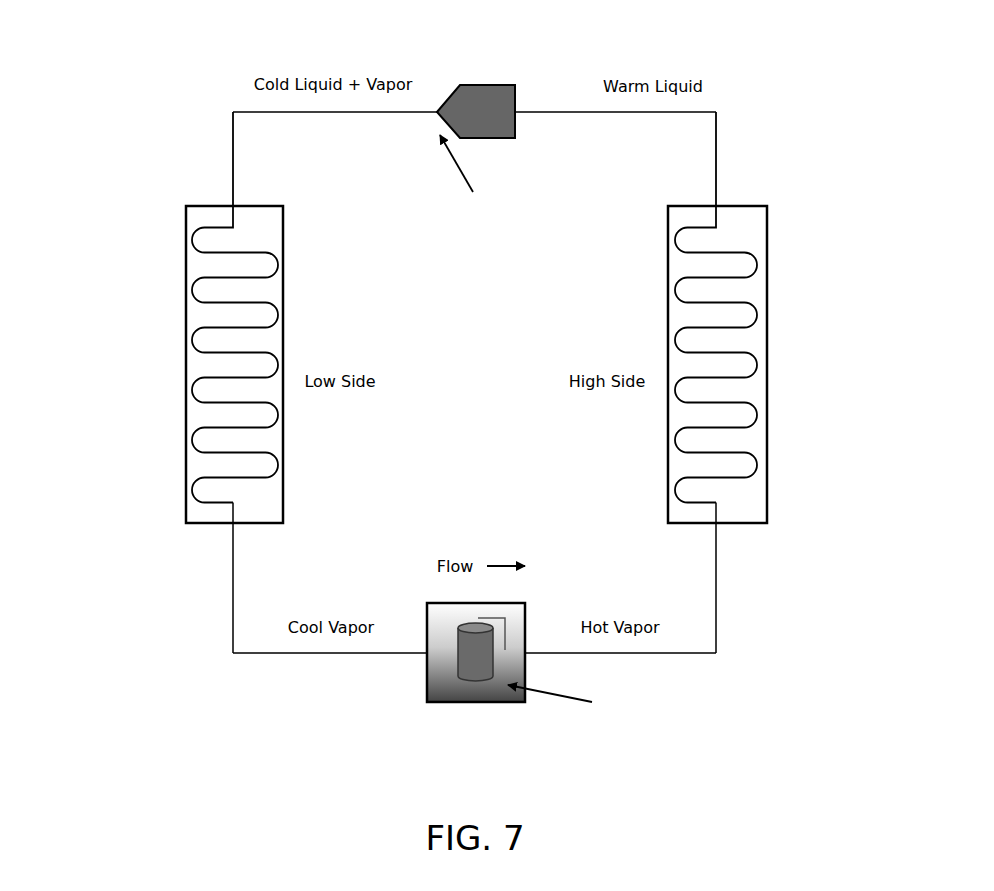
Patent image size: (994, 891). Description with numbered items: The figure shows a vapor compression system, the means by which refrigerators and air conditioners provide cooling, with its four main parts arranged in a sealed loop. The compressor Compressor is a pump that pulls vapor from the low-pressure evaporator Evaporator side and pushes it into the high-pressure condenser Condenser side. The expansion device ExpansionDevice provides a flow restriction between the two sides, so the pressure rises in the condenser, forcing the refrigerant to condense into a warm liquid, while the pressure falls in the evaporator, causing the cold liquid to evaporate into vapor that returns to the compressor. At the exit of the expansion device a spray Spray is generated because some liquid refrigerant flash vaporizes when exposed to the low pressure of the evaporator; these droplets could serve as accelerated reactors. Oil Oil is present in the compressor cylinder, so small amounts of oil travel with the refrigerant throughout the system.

The evaporator Evaporator is at (156, 317).
The condenser Condenser is at (795, 317).
The expansion device ExpansionDevice is at (475, 80).
The spray Spray is at (475, 178).
The compressor Compressor is at (476, 667).
The oil Oil is at (567, 698).